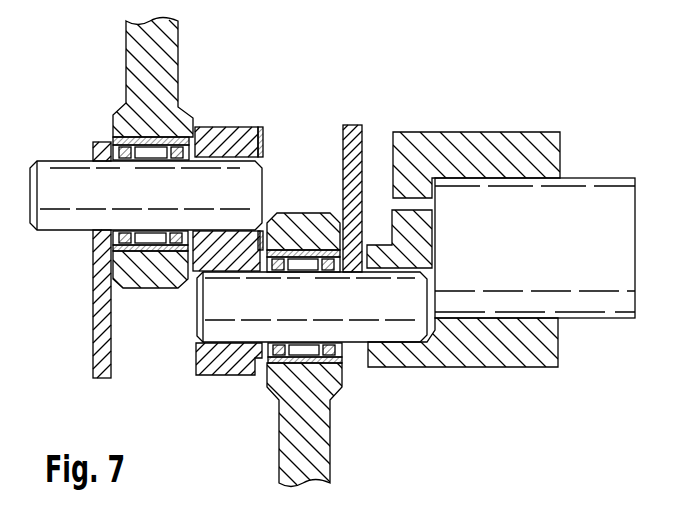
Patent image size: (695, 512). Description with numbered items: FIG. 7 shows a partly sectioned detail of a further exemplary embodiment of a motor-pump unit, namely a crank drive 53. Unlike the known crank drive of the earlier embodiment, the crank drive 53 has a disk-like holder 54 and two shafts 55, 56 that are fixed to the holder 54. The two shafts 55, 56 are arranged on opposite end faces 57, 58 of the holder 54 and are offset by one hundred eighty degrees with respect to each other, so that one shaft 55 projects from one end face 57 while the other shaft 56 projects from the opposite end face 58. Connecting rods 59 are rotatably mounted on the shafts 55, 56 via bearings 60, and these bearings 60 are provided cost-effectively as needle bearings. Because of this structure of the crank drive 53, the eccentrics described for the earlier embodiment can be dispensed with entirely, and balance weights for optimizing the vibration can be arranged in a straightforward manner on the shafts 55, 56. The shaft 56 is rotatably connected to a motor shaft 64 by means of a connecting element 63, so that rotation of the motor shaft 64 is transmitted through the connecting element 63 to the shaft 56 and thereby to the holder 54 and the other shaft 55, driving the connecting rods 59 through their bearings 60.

The crank drive 53 is at (267, 109).
The disk-like holder 54 is at (223, 137).
The shaft 55 is at (62, 182).
The shaft 56 is at (230, 327).
The end face 57 is at (194, 363).
The end face 58 is at (262, 146).
The connecting rod 59 is at (143, 53).
The bearing 60 is at (303, 262).
The connecting element 63 is at (527, 150).
The motor shaft 64 is at (598, 198).